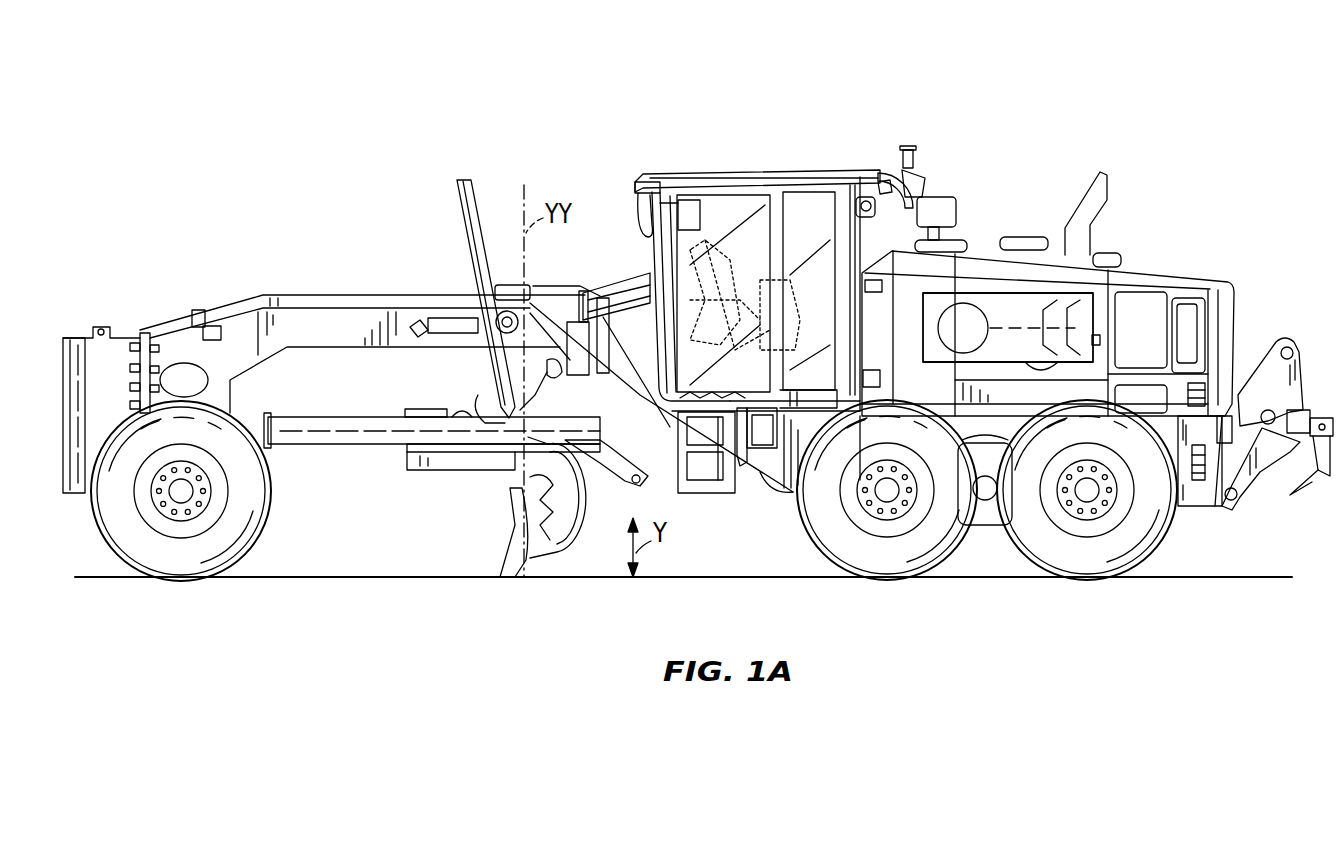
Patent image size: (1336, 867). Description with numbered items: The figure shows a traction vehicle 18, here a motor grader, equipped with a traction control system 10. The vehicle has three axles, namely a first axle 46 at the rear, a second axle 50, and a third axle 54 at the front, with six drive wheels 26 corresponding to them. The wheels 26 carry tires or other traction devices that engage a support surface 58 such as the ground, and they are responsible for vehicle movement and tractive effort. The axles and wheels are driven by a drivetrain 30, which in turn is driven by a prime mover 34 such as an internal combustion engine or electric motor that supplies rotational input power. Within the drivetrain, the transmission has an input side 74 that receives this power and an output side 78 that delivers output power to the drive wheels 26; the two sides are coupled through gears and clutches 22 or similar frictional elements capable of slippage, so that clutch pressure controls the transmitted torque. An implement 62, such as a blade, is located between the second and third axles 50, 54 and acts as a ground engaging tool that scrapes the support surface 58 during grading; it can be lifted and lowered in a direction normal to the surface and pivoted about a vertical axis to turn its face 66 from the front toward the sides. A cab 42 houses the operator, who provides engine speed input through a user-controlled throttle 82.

The traction control system 10 is at (690, 204).
The traction vehicle 18 is at (347, 115).
The gears and clutches 22 is at (1047, 355).
The wheels 26 is at (248, 484).
The drivetrain 30 is at (1092, 318).
The prime mover 34 is at (965, 304).
The cab 42 is at (848, 172).
The first axle 46 is at (1087, 490).
The second axle 50 is at (887, 490).
The third axle 54 is at (181, 491).
The support surface 58 is at (1252, 577).
The implement 62 is at (530, 558).
The face 66 is at (505, 555).
The input side 74 is at (1043, 300).
The output side 78 is at (1080, 306).
The user-controlled throttle 82 is at (734, 328).